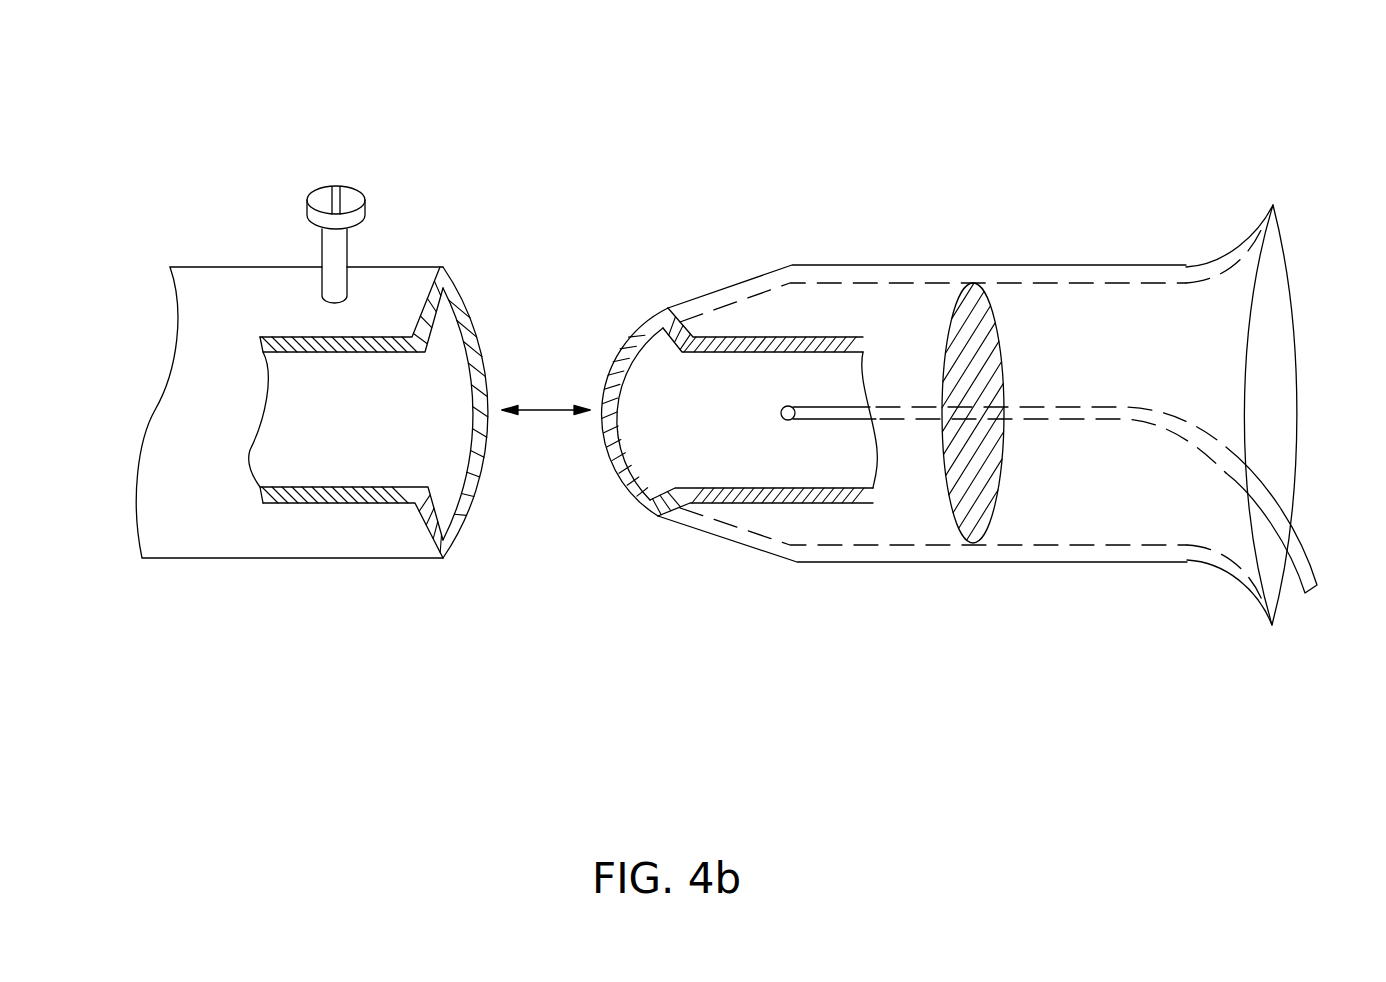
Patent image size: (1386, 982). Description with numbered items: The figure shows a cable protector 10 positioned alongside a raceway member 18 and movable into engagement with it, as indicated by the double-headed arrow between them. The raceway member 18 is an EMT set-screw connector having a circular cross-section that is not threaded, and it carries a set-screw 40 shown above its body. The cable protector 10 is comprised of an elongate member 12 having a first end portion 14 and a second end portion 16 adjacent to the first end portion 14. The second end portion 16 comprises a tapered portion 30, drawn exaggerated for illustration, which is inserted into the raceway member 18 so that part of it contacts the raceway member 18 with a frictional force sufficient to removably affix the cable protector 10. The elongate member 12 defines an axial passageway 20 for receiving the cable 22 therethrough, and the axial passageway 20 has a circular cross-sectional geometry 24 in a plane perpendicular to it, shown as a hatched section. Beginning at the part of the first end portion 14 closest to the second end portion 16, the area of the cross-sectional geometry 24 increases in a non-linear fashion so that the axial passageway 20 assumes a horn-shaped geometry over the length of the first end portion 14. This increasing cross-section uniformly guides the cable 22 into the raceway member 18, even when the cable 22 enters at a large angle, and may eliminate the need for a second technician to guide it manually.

The cable protector 10 is at (955, 130).
The elongate member 12 is at (702, 720).
The first end portion 14 is at (1177, 237).
The second end portion 16 is at (720, 247).
The raceway member 18 is at (253, 237).
The axial passageway 20 is at (693, 433).
The cable 22 is at (1331, 538).
The cross-sectional geometry 24 is at (957, 497).
The tapered portion 30 is at (720, 552).
The set-screw 40 is at (377, 197).